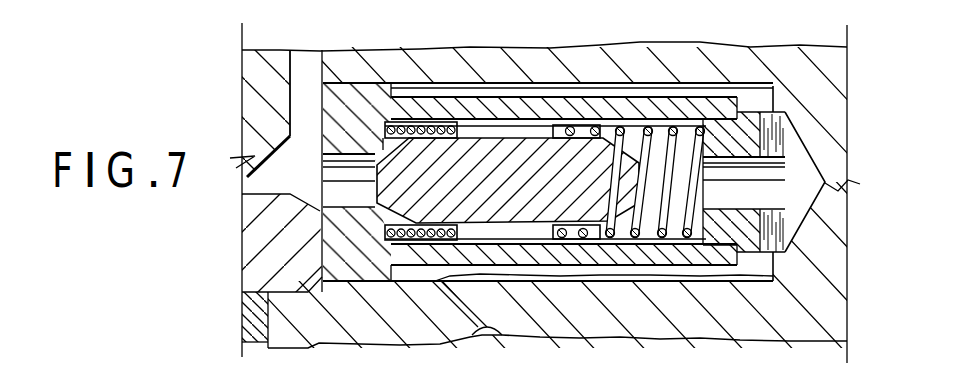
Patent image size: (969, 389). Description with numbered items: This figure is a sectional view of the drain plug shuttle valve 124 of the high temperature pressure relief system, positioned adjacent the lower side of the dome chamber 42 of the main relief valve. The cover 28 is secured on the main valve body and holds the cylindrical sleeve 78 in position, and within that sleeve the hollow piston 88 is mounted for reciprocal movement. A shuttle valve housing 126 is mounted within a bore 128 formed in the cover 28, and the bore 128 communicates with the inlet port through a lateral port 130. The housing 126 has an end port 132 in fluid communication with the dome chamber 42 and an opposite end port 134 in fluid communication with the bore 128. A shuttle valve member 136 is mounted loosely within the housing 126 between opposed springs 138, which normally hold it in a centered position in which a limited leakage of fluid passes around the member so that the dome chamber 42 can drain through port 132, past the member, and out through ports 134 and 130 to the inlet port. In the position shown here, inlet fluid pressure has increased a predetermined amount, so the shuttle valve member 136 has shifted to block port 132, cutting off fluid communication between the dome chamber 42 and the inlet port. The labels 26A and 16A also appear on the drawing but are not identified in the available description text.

The valve body 28 is at (366, 48).
The slot 88 is at (301, 72).
The end block 42 is at (267, 184).
The lower block 78 is at (262, 254).
The bore / stem 132 is at (348, 156).
The sleeve upper wall 124 is at (514, 90).
The sleeve lower wall 126 is at (617, 254).
The gasket 128 is at (716, 280).
The piston 136 is at (540, 137).
The spring-energized seals 138 is at (429, 126).
The end cap stem 134 is at (750, 158).
The passage 130 is at (505, 336).
The element 26A is at (311, 381).
The element 16A is at (418, 381).